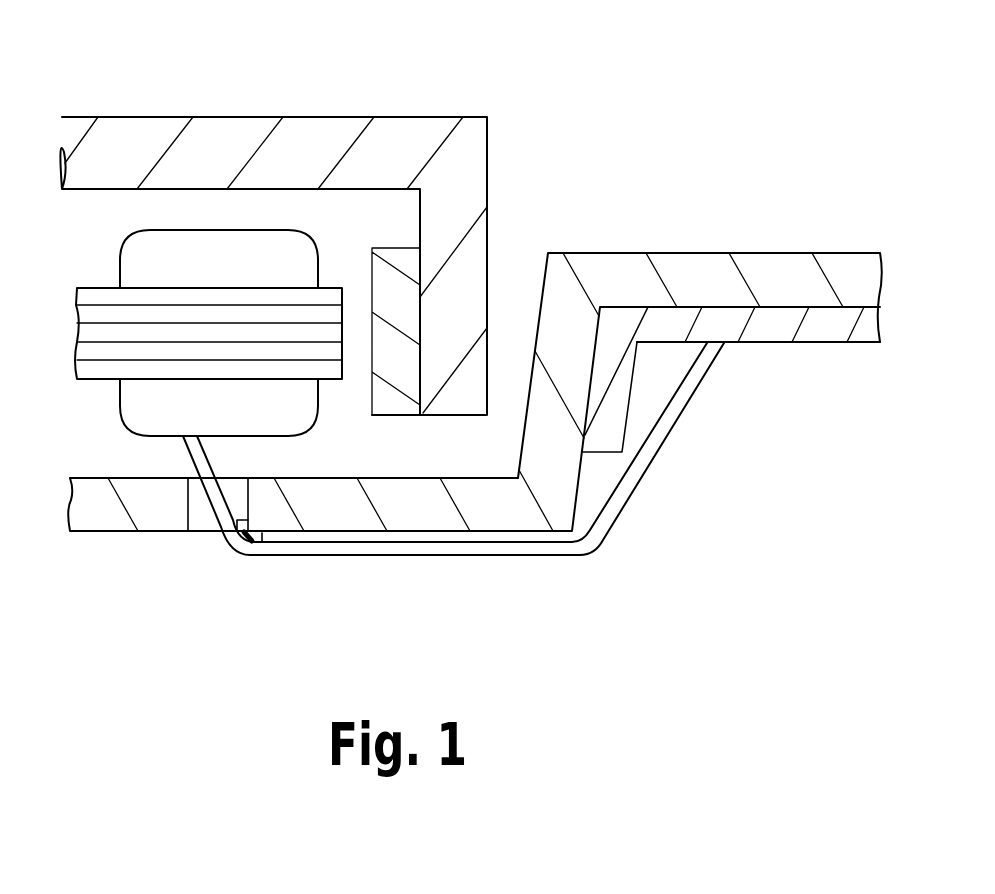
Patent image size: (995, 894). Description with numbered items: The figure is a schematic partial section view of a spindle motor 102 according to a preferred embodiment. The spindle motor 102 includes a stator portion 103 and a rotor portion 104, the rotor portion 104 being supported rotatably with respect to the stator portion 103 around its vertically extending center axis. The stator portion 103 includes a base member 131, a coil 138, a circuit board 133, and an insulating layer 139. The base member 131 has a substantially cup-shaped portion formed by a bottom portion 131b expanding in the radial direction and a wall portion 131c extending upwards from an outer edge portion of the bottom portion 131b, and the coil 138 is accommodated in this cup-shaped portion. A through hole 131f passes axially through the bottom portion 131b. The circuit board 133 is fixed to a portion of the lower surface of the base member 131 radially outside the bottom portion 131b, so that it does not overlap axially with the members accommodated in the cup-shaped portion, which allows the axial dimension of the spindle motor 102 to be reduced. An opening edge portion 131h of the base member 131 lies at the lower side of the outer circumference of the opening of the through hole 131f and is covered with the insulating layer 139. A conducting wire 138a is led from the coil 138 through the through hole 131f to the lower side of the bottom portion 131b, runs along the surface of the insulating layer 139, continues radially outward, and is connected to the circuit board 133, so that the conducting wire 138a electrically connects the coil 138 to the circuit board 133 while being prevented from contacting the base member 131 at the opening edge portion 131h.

The spindle motor 102 is at (139, 98).
The rotor portion 104 is at (427, 100).
The stator portion 103 is at (507, 597).
The base member 131 is at (743, 223).
The bottom portion 131b is at (111, 520).
The wall portion 131c is at (553, 356).
The through hole 131f is at (205, 522).
The opening edge portion 131h is at (255, 522).
The circuit board 133 is at (773, 330).
The coil 138 is at (132, 407).
The conducting wire 138a is at (643, 472).
The insulating layer 139 is at (238, 553).